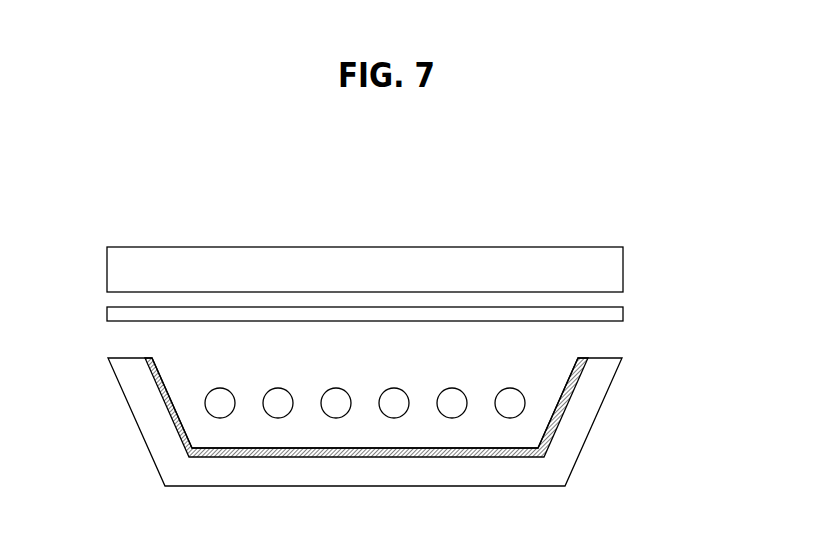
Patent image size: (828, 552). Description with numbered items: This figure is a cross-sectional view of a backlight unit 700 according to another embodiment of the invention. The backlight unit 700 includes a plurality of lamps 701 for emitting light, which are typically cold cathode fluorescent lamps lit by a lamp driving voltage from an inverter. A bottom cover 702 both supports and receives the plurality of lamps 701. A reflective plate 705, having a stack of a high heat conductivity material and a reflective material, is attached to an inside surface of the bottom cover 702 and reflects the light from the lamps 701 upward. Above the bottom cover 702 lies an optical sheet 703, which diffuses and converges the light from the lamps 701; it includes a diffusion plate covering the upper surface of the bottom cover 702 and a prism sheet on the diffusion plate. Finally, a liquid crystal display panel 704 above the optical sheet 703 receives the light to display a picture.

The backlight unit 700 is at (118, 213).
The lamps 701 is at (395, 405).
The bottom cover 702 is at (600, 387).
The optical sheet 703 is at (623, 312).
The liquid crystal display panel 704 is at (623, 271).
The reflective plate 705 is at (558, 402).